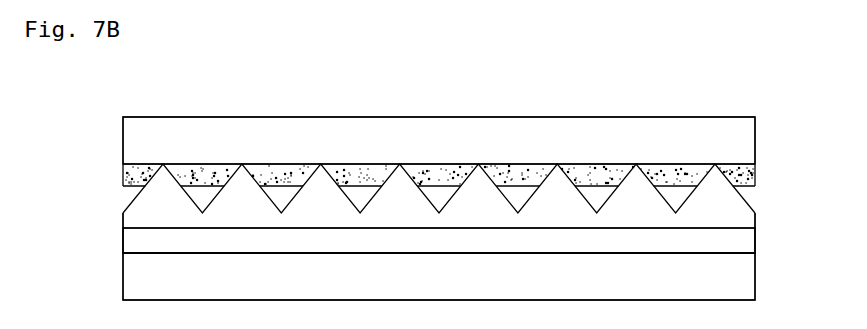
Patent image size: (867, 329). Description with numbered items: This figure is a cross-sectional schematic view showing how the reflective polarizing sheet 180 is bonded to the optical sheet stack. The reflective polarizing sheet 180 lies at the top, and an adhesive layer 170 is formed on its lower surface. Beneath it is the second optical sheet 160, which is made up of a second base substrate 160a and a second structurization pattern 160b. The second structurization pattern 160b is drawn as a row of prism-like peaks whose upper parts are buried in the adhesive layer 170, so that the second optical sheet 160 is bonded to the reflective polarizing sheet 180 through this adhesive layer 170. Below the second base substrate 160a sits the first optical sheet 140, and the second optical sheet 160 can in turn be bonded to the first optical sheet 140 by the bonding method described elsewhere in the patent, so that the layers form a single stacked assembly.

The first optical sheet 140 is at (738, 280).
The second optical sheet 160 is at (751, 207).
The second base substrate 160a is at (128, 243).
The second structurization pattern 160b is at (138, 213).
The adhesive layer 170 is at (130, 180).
The reflective polarizing sheet 180 is at (738, 143).